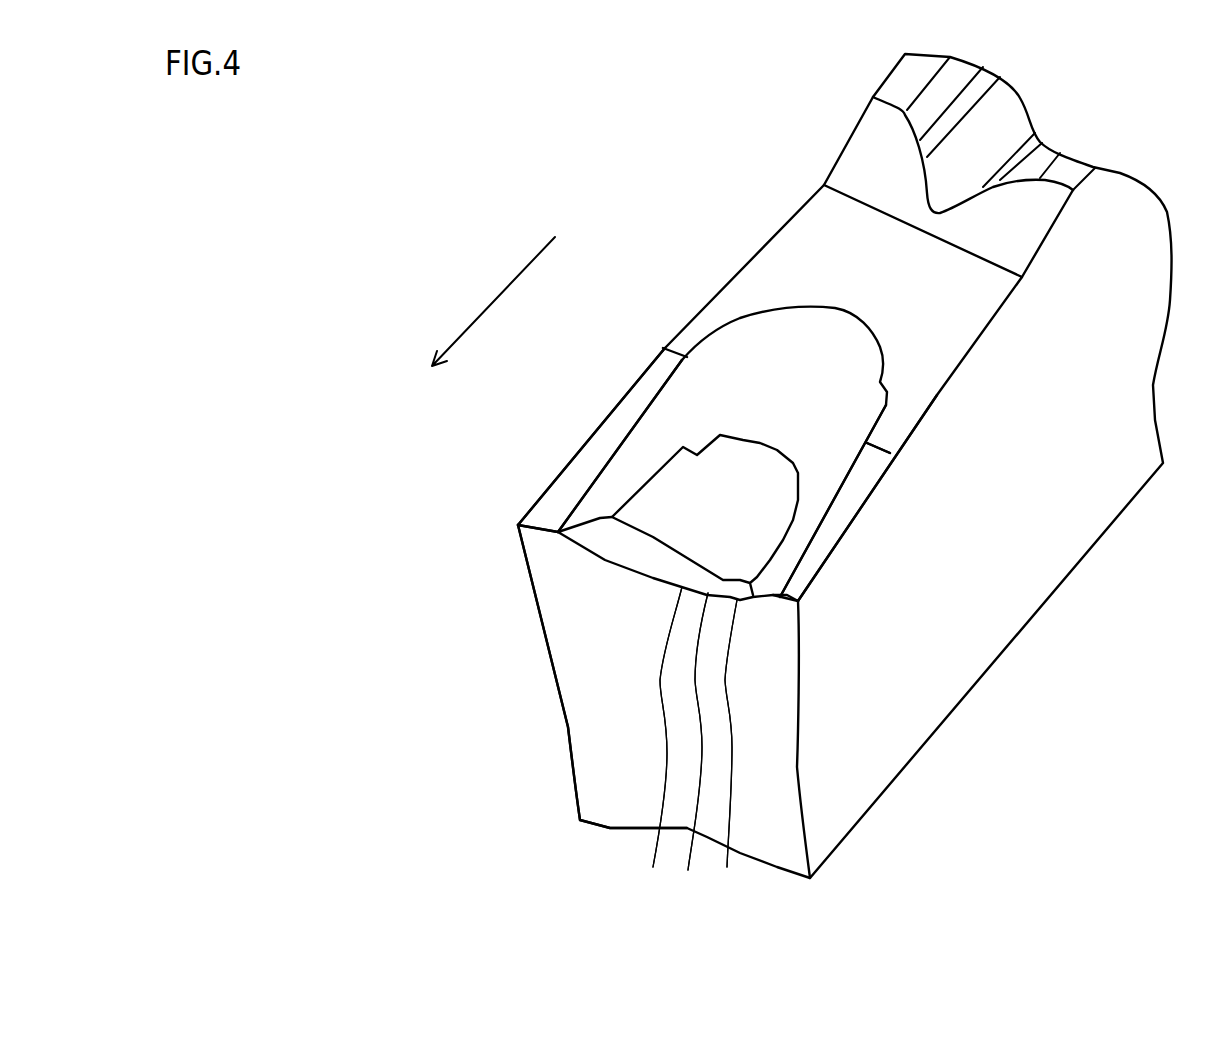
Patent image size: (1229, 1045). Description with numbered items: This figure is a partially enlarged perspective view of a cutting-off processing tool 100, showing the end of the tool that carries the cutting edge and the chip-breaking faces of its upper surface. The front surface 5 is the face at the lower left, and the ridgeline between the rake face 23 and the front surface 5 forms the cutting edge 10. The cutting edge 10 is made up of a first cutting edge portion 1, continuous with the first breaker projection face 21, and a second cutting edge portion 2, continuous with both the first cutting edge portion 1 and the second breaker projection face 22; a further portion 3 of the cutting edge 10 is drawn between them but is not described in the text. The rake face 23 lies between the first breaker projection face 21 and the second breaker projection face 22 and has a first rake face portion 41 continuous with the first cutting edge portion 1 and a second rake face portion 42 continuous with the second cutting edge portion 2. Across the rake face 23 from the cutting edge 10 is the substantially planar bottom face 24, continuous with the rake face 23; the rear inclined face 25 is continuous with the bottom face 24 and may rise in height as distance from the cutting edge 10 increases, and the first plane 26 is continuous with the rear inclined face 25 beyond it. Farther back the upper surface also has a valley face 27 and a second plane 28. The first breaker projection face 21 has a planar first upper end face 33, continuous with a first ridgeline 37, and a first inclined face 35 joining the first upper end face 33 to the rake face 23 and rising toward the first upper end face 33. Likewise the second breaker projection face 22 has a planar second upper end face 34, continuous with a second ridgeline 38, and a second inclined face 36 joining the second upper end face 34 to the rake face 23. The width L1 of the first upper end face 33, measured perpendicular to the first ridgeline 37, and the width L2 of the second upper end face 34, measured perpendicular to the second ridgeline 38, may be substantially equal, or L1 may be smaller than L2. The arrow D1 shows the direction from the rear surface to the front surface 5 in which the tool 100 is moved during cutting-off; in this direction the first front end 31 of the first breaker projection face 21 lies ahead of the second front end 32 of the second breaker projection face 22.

The cutting-off processing tool 100 is at (677, 161).
The first cutting edge portion 1 is at (663, 739).
The second cutting edge portion 2 is at (728, 746).
The third line 3 is at (695, 742).
The front surface 5 is at (590, 712).
The cutting edge 10 is at (637, 888).
The first breaker projection face 21 is at (550, 432).
The second breaker projection face 22 is at (990, 743).
The rake face 23 is at (470, 605).
The bottom face 24 is at (713, 510).
The rear inclined face 25 is at (800, 380).
The first plane 26 is at (810, 247).
The valley face 27 is at (1000, 127).
The second plane 28 is at (1063, 167).
The first front end 31 is at (517, 525).
The second front end 32 is at (798, 603).
The first upper end face 33 is at (535, 523).
The second upper end face 34 is at (793, 590).
The first inclined face 35 is at (560, 525).
The second inclined face 36 is at (783, 557).
The first ridgeline 37 is at (613, 423).
The second ridgeline 38 is at (865, 515).
The first rake face portion 41 is at (650, 557).
The second rake face portion 42 is at (730, 583).
The direction from rear surface to front surface D1 is at (513, 300).
The width of first upper end face L1 is at (583, 468).
The width of second upper end face L2 is at (825, 551).